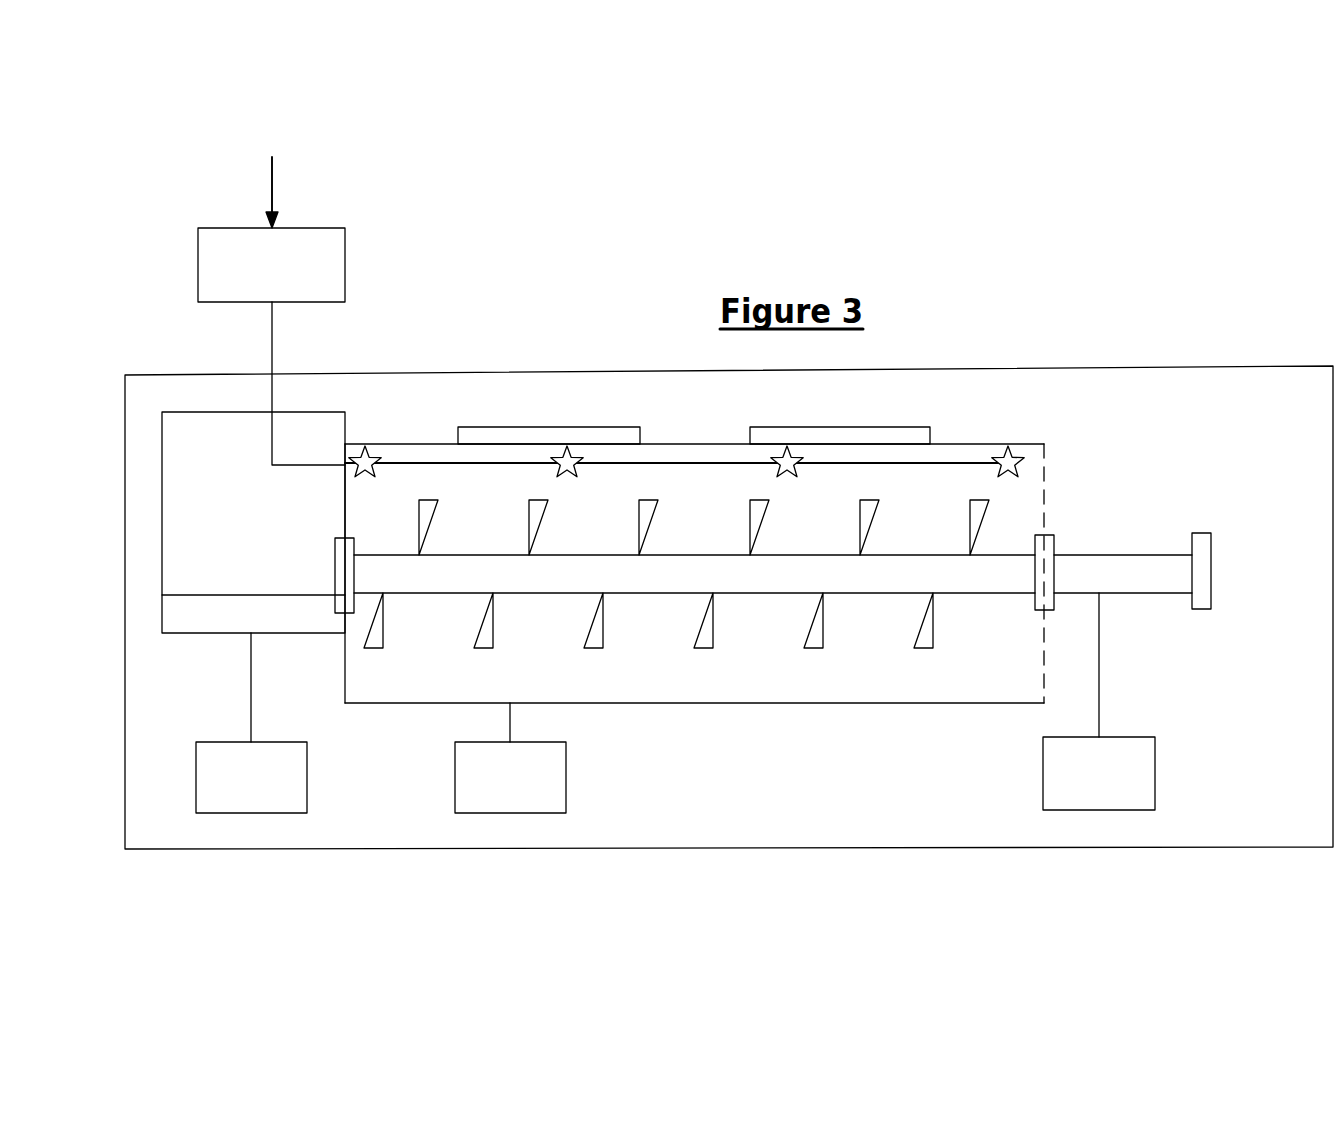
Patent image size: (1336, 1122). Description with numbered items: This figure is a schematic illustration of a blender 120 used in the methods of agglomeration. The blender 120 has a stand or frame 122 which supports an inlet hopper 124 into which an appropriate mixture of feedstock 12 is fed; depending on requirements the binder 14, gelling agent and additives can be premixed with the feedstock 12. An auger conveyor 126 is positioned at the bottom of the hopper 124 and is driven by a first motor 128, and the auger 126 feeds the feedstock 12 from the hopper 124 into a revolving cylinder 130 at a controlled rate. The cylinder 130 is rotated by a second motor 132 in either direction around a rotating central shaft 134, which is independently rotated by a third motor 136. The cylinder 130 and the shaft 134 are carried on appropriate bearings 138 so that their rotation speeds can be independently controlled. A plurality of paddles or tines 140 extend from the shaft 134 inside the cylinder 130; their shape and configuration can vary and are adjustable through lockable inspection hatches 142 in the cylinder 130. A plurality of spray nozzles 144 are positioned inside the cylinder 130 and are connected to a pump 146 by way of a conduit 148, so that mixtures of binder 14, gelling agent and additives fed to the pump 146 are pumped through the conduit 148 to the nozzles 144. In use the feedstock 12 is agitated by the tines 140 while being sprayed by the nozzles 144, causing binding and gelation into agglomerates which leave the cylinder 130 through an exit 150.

The feedstock 12 is at (208, 452).
The binder 14 is at (340, 169).
The blender 120 is at (1138, 252).
The frame 122 is at (1090, 375).
The inlet hopper 124 is at (162, 541).
The auger conveyor 126 is at (203, 632).
The first motor 128 is at (245, 799).
The revolving cylinder 130 is at (638, 702).
The second motor 132 is at (510, 803).
The central shaft 134 is at (1160, 557).
The third motor 136 is at (1105, 803).
The bearings 138 is at (1211, 572).
The tines 140 is at (905, 649).
The lockable inspection hatches 142 is at (568, 460).
The spray nozzles 144 is at (1012, 450).
The pump 146 is at (345, 265).
The conduit 148 is at (275, 338).
The exit 150 is at (1025, 660).